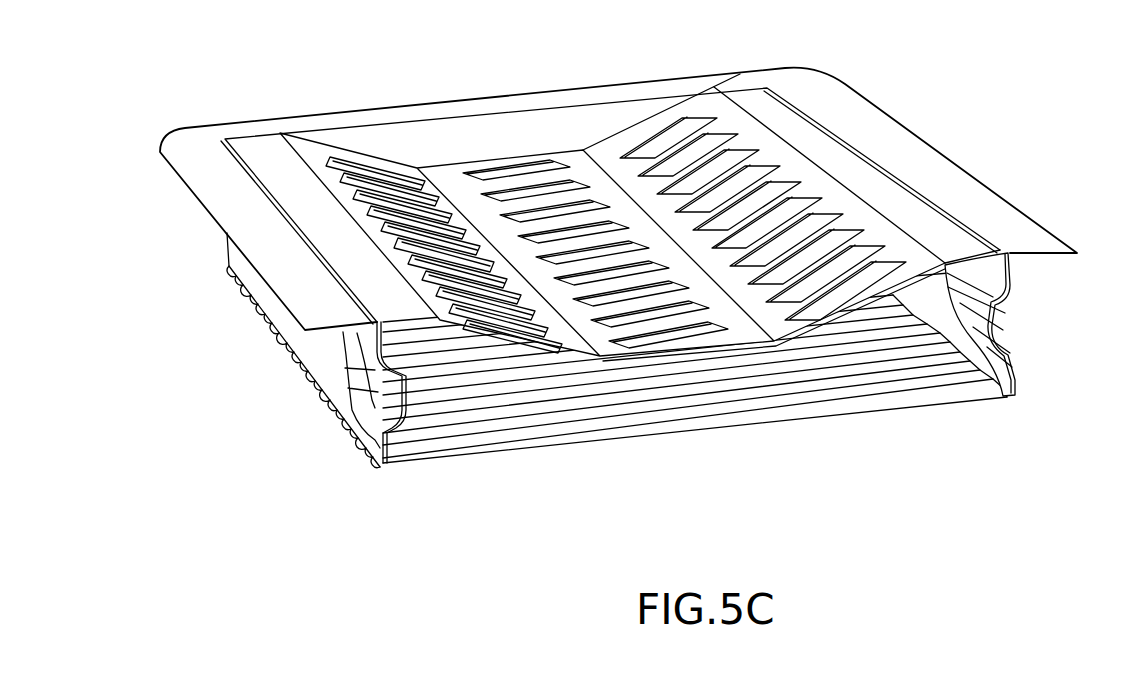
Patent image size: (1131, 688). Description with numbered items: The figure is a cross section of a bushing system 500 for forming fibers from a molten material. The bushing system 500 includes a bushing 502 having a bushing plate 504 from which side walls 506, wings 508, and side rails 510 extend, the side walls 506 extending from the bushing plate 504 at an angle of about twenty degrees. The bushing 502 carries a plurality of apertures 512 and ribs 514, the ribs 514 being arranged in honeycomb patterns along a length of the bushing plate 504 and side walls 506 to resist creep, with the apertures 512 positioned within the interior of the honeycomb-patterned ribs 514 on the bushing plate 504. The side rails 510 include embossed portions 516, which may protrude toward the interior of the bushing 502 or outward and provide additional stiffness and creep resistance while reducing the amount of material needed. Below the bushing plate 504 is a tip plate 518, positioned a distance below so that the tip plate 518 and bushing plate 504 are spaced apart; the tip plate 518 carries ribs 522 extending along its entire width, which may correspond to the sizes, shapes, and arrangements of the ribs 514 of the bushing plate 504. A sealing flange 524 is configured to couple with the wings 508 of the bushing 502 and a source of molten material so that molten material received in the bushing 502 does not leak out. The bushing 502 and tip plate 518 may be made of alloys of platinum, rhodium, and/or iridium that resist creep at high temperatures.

The bushing system 500 is at (362, 556).
The bushing 502 is at (760, 334).
The bushing plate 504 is at (447, 178).
The side walls 506 is at (612, 143).
The wings 508 is at (812, 138).
The side rails 510 is at (313, 353).
The apertures 512 is at (695, 336).
The ribs 514 is at (738, 78).
The embossed portions 516 is at (996, 330).
The tip plate 518 is at (582, 445).
The ribs 522 is at (957, 365).
The sealing flange 524 is at (175, 132).